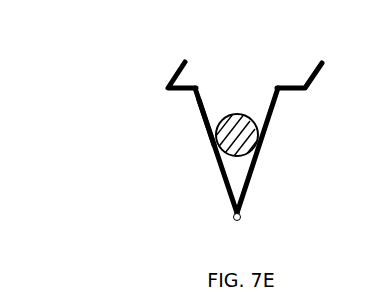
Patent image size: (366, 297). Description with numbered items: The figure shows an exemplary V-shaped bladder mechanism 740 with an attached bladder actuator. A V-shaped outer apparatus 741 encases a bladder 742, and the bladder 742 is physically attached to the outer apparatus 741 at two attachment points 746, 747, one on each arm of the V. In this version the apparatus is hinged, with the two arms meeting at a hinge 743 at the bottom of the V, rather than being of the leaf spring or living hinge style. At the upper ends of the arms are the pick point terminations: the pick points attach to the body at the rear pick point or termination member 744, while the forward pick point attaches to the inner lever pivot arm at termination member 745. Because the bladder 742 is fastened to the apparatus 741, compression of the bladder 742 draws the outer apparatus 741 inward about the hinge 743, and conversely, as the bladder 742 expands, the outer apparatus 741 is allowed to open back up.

The v-shaped bladder mechanism 740 is at (103, 90).
The v-shaped apparatus 741 is at (195, 107).
The bladder 742 is at (239, 112).
The hinge 743 is at (242, 218).
The rear pick point termination member 744 is at (325, 60).
The forward pick point termination member 745 is at (170, 78).
The bladder attachment point 746 is at (207, 140).
The bladder attachment point 747 is at (261, 133).